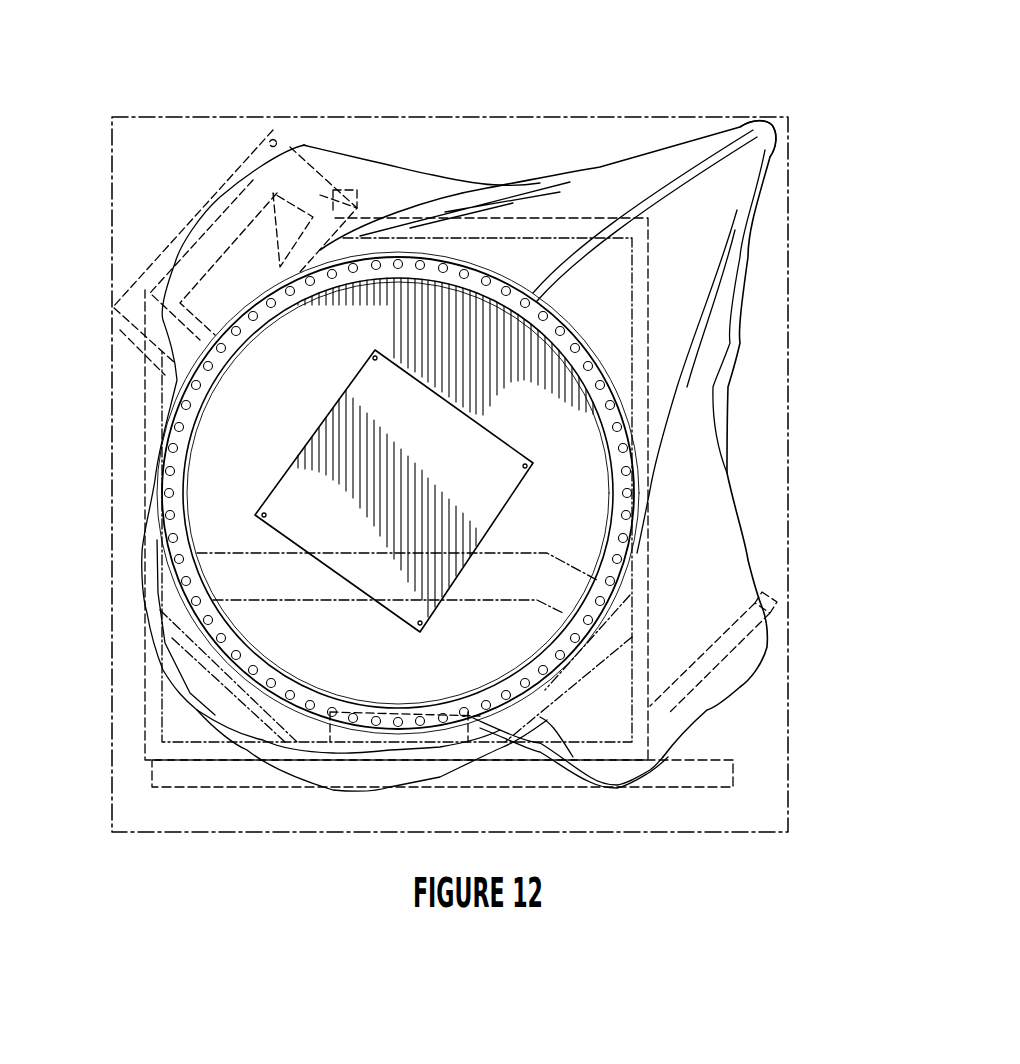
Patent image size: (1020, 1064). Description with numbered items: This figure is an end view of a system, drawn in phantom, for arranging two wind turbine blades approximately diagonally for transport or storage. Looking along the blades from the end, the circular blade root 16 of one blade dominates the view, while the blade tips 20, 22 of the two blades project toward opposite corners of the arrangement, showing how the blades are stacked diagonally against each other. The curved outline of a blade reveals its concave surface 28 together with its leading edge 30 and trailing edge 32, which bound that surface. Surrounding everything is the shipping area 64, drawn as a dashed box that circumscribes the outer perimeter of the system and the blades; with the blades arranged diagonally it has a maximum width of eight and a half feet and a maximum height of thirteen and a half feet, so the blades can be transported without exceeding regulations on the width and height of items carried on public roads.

The blade root 16 is at (592, 358).
The blade tip 20 is at (747, 683).
The blade tip 22 is at (305, 145).
The concave surface 28 is at (709, 590).
The leading edge 30 is at (193, 710).
The trailing edge 32 is at (775, 153).
The shipping area 64 is at (112, 750).